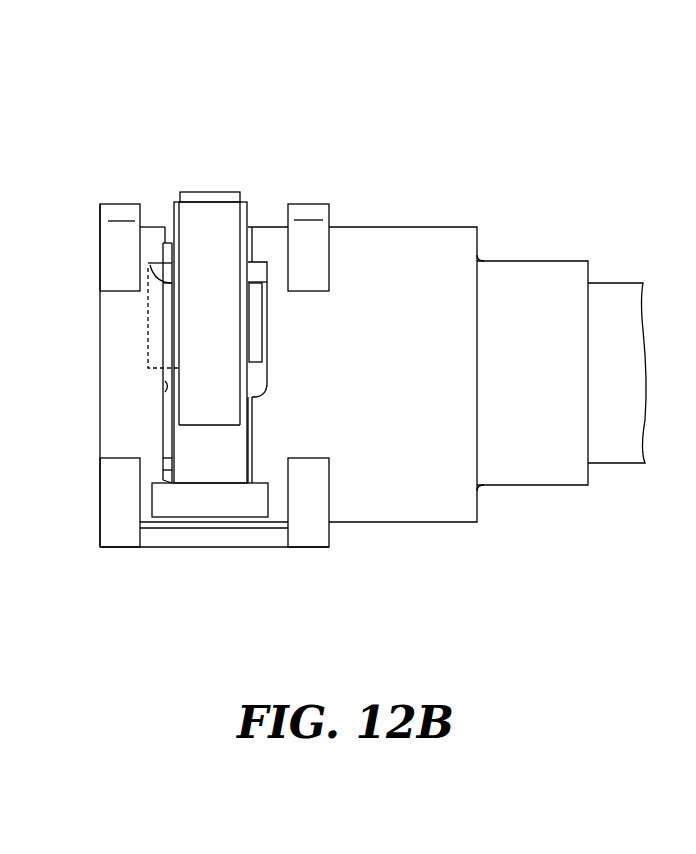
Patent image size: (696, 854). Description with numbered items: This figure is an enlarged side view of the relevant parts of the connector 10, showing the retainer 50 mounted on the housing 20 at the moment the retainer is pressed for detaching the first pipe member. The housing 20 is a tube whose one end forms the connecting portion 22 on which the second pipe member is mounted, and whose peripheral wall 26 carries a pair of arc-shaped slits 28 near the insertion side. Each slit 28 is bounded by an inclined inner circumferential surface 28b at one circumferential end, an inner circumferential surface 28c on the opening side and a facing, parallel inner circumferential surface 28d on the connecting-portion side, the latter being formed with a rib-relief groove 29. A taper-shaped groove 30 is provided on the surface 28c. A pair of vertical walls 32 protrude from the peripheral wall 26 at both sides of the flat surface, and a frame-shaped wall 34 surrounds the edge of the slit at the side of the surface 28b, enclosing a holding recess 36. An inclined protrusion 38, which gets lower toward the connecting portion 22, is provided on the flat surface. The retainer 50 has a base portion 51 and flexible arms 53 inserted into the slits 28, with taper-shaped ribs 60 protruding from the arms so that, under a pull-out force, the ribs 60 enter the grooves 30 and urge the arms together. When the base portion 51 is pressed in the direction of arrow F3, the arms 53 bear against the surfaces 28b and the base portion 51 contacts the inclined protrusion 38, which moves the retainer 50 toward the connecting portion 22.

The connector 10 is at (408, 196).
The housing 20 is at (371, 535).
The connecting portion 22 is at (615, 452).
The peripheral wall 26 is at (440, 512).
The slit 28 is at (161, 419).
The inner circumferential surface 28b is at (167, 467).
The inner circumferential surface 28c is at (165, 387).
The inner circumferential surface 28d is at (243, 425).
The rib-relief groove 29 is at (268, 352).
The groove 30 is at (152, 275).
The vertical wall 32 is at (122, 203).
The frame-shaped wall 34 is at (120, 539).
The holding recess 36 is at (277, 514).
The inclined protrusion 38 is at (170, 238).
The retainer 50 is at (191, 176).
The base portion 51 is at (220, 197).
The arm 53 is at (220, 378).
The rib 60 is at (255, 325).
The pressing direction F3 is at (208, 176).